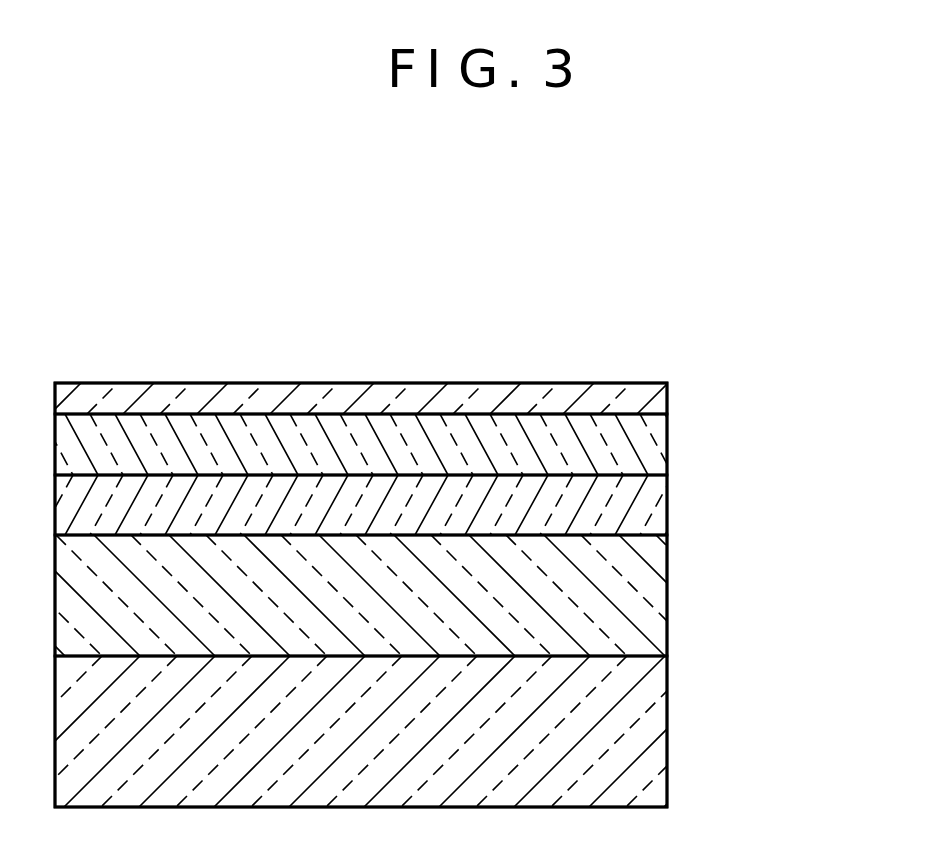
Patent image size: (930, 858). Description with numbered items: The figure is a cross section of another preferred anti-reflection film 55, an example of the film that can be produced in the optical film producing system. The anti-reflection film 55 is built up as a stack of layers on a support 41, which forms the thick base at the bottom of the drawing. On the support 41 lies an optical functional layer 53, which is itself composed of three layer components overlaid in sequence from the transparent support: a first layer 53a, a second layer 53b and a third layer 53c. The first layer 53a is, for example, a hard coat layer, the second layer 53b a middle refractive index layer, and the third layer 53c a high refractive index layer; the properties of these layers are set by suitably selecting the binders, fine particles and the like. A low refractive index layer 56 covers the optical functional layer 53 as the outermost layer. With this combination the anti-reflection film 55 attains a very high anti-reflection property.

The anti-reflection film 55 is at (477, 340).
The low refractive index layer 56 is at (668, 393).
The optical functional layer 53 is at (822, 427).
The third layer 53c is at (655, 445).
The second layer 53b is at (655, 505).
The first layer 53a is at (658, 590).
The support 41 is at (655, 722).